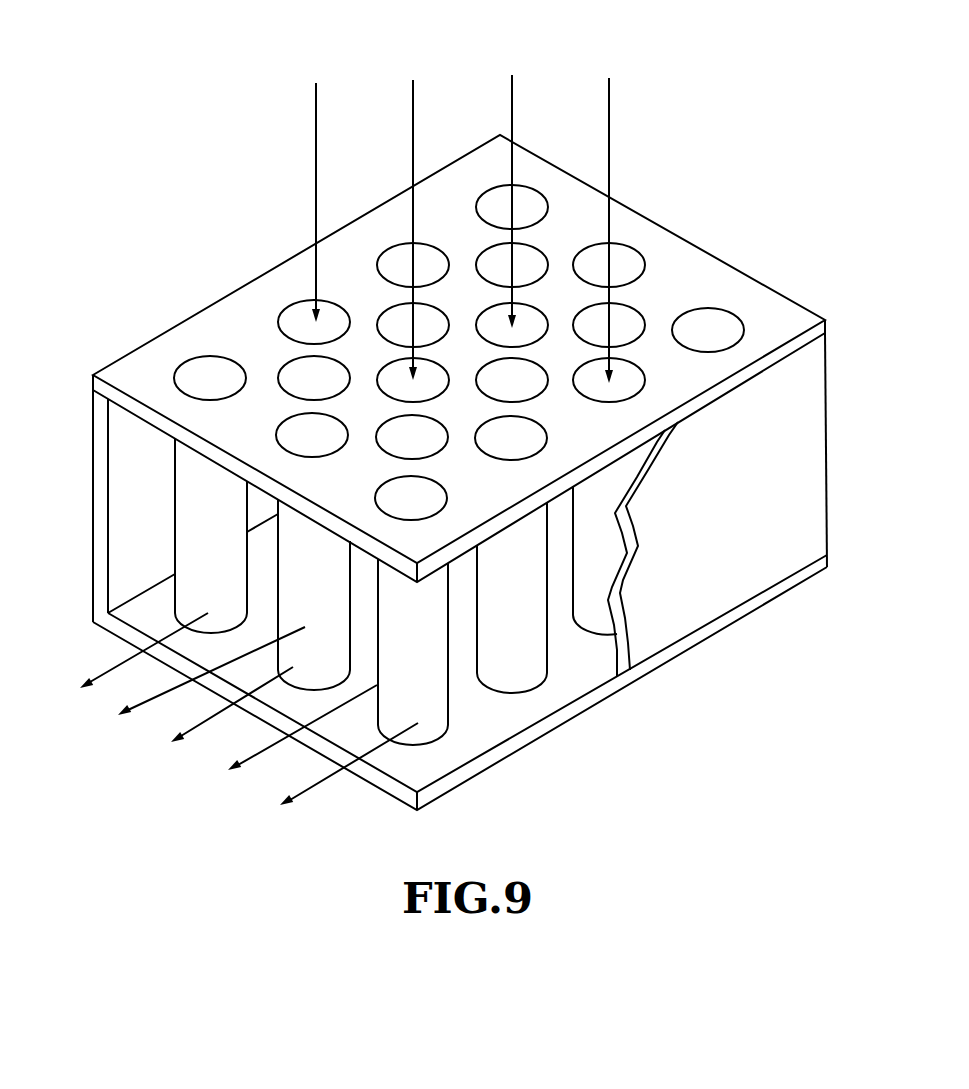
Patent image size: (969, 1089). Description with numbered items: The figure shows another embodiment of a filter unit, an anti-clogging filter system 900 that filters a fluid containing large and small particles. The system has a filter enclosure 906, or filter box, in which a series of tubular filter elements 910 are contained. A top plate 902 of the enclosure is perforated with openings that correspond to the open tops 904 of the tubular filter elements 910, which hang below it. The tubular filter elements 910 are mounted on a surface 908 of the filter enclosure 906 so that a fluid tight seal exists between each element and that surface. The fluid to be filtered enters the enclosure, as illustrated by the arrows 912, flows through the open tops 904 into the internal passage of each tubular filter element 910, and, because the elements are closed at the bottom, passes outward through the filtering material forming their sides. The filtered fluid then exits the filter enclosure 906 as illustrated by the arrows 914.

The anti-clogging filter system 900 is at (233, 161).
The top plate 902 is at (685, 265).
The open tops 904 is at (300, 373).
The filter enclosure 906 is at (166, 513).
The surface 908 is at (470, 750).
The tubular filter elements 910 is at (530, 670).
The arrows 912 is at (625, 73).
The arrows 914 is at (270, 833).